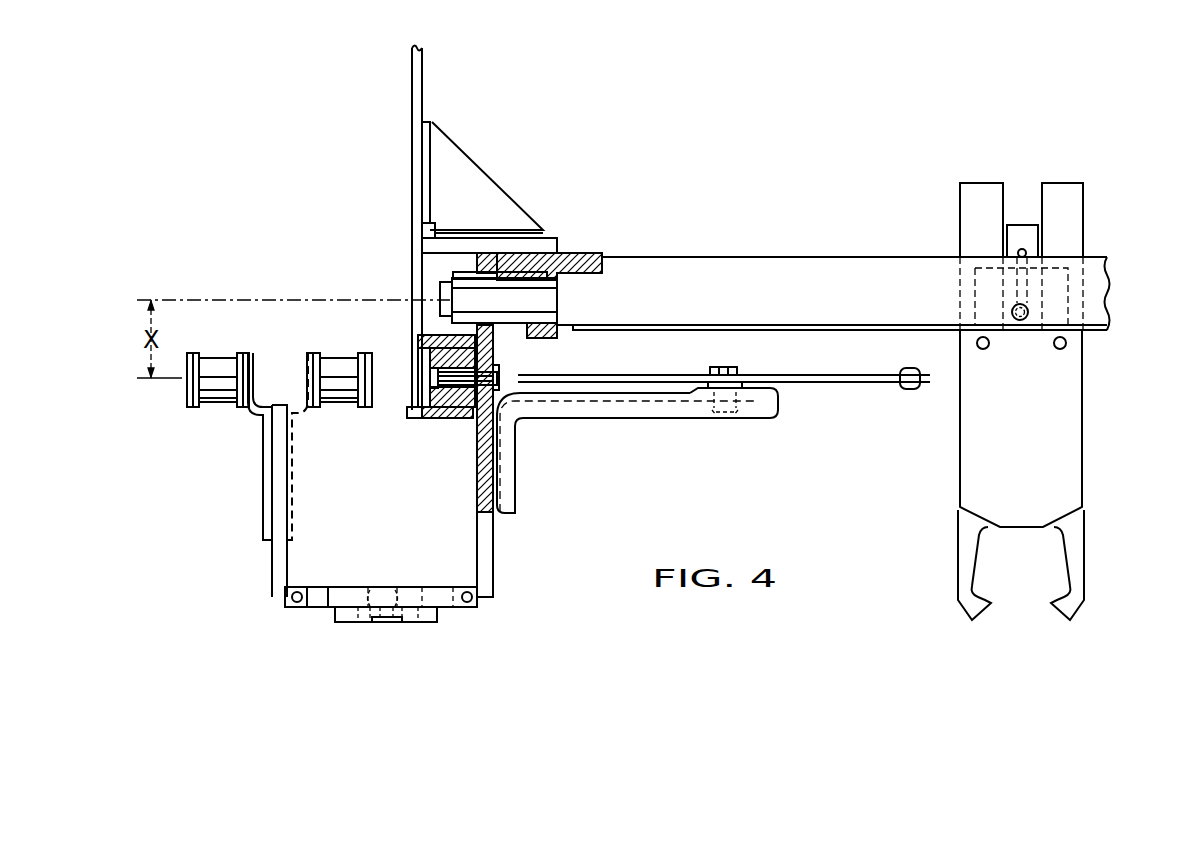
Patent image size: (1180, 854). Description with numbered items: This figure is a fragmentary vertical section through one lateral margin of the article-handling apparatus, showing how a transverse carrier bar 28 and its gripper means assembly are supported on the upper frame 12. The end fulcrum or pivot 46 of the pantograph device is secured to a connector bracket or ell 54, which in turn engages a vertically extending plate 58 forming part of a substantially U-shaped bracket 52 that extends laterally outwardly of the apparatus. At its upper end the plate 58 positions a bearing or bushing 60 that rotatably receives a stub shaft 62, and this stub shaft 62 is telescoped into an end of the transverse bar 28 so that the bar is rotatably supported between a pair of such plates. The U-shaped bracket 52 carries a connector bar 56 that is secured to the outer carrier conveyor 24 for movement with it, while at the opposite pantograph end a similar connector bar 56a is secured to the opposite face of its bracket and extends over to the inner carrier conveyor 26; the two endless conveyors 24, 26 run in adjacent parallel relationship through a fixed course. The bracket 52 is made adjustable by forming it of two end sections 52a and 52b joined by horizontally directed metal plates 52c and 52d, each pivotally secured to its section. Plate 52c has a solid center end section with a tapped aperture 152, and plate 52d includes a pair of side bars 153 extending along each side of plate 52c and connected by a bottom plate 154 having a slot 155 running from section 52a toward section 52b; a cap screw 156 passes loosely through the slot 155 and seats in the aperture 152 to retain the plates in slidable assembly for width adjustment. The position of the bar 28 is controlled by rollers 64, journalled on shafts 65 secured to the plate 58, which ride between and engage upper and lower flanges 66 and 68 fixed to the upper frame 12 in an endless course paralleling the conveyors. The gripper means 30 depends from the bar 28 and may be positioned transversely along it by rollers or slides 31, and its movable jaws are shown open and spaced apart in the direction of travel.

The upper frame portion 12 is at (424, 92).
The outer carrier conveyor 24 is at (238, 352).
The inner carrier conveyor 26 is at (359, 352).
The transverse positioning bar 28 is at (803, 255).
The article gripper means 30 is at (1088, 372).
The roller or slide 31 is at (1057, 268).
The fulcrum or pivot 46 is at (723, 366).
The U-shaped bracket 52 is at (382, 541).
The bracket end section 52a is at (270, 565).
The bracket end section 52b is at (478, 545).
The horizontal metal plate 52c is at (318, 607).
The horizontal metal plate 52d is at (446, 590).
The connector bracket or ell 54 is at (652, 420).
The connector bar 56 is at (263, 471).
The connector bar 56a is at (292, 468).
The plate 58 is at (495, 354).
The bearing or bushing 60 is at (462, 277).
The stub shaft 62 is at (547, 293).
The roller 64 is at (438, 415).
The roller shaft 65 is at (470, 412).
The upper flange 66 is at (435, 335).
The lower flange 68 is at (407, 412).
The tapped aperture 152 is at (369, 587).
The side bar 153 is at (406, 592).
The bottom plate 154 is at (437, 617).
The slot 155 is at (370, 624).
The cap screw 156 is at (381, 622).